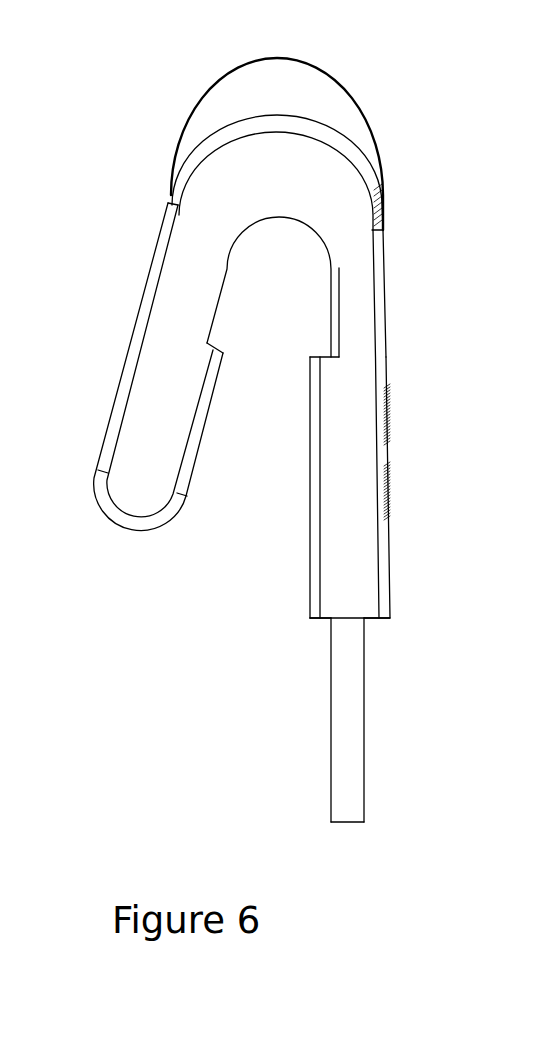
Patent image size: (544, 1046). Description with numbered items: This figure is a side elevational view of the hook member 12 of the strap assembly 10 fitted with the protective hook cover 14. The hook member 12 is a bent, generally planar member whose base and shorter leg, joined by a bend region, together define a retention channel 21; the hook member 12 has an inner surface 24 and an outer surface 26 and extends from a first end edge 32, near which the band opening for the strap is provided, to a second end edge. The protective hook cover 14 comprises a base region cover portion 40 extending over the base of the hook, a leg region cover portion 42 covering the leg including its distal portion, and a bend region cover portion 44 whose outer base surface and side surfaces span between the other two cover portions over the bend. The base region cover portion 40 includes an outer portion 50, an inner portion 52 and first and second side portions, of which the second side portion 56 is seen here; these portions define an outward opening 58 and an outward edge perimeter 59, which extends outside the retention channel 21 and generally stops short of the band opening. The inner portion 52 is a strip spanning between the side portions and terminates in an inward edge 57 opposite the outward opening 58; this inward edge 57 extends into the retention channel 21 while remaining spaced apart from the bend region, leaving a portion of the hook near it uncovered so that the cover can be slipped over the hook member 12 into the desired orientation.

The strap assembly 10 is at (83, 235).
The hook member 12 is at (359, 739).
The protective hook cover 14 is at (378, 312).
The retention channel 21 is at (296, 288).
The inner surface 24 is at (318, 743).
The outer surface 26 is at (375, 756).
The first end edge 32 is at (359, 832).
The base region cover portion 40 is at (410, 564).
The leg region cover portion 42 is at (100, 384).
The bend region cover portion 44 is at (374, 97).
The outer portion 50 is at (400, 438).
The inner portion 52 is at (295, 540).
The second side portion 56 is at (368, 480).
The inward edge 57 is at (331, 362).
The outward opening 58 is at (384, 633).
The outward edge perimeter 59 is at (305, 629).